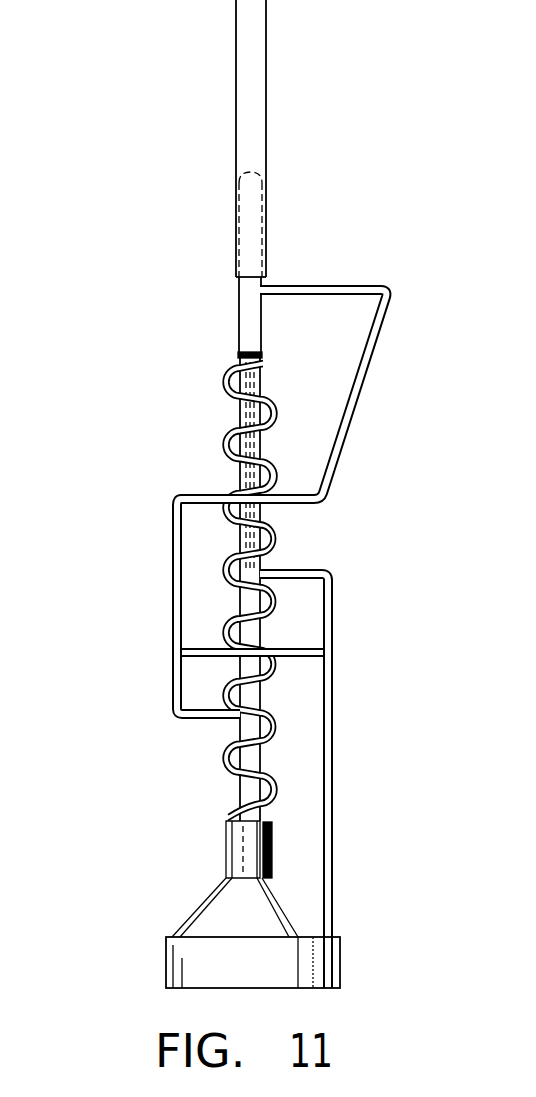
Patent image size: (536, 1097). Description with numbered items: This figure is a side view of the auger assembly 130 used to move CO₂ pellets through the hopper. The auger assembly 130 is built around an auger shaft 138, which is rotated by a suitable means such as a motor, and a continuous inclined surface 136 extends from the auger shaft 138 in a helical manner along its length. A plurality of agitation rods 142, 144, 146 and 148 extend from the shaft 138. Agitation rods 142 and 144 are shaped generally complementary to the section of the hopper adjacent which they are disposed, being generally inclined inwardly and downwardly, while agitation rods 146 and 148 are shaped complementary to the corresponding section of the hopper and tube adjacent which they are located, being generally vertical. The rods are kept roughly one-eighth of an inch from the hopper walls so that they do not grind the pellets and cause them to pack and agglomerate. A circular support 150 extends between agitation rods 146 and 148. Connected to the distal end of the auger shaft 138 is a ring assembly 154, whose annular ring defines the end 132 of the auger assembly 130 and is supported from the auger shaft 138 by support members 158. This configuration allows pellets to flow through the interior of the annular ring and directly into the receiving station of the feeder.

The auger assembly 130 is at (195, 353).
The end of auger assembly 132 is at (213, 988).
The continuous inclined surface 136 is at (282, 526).
The auger shaft 138 is at (243, 312).
The agitation rod 142 is at (369, 348).
The agitation rod 144 is at (232, 401).
The agitation rod 146 is at (173, 558).
The agitation rod 148 is at (331, 690).
The circular support 150 is at (197, 648).
The ring assembly 154 is at (172, 879).
The support members 158 is at (205, 905).